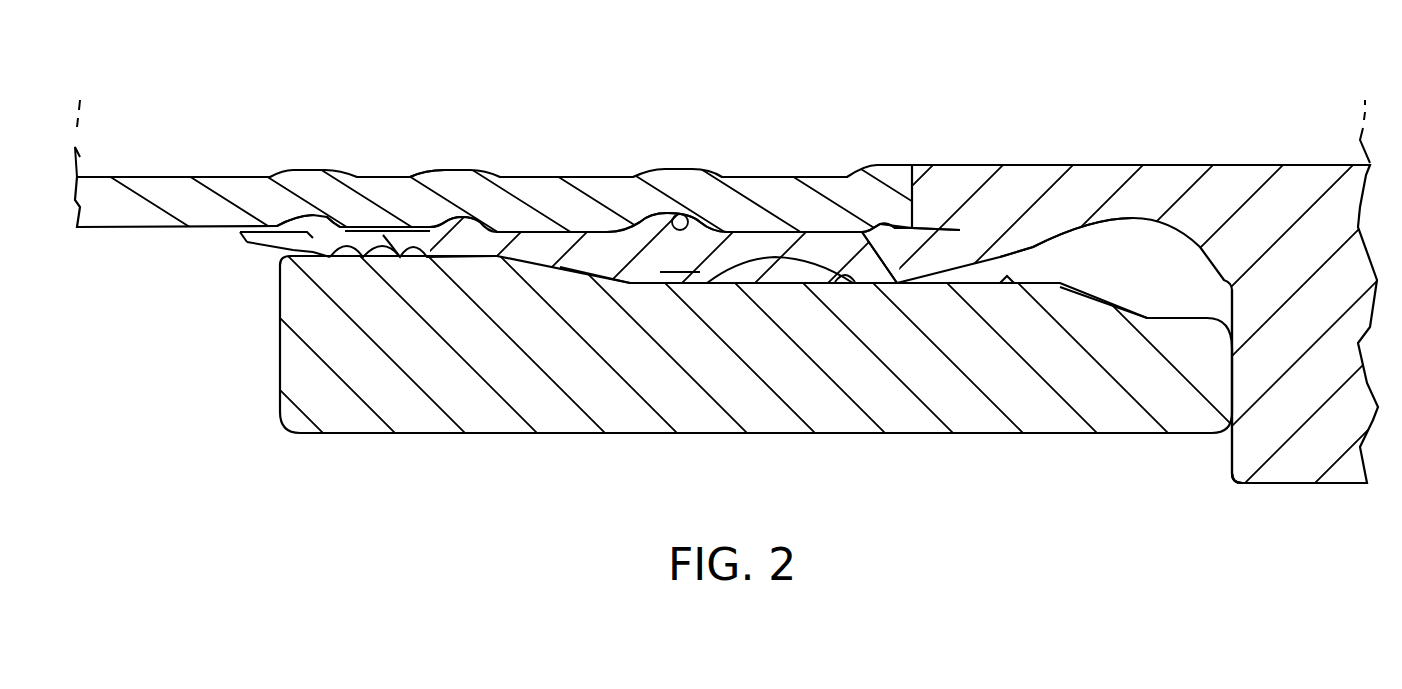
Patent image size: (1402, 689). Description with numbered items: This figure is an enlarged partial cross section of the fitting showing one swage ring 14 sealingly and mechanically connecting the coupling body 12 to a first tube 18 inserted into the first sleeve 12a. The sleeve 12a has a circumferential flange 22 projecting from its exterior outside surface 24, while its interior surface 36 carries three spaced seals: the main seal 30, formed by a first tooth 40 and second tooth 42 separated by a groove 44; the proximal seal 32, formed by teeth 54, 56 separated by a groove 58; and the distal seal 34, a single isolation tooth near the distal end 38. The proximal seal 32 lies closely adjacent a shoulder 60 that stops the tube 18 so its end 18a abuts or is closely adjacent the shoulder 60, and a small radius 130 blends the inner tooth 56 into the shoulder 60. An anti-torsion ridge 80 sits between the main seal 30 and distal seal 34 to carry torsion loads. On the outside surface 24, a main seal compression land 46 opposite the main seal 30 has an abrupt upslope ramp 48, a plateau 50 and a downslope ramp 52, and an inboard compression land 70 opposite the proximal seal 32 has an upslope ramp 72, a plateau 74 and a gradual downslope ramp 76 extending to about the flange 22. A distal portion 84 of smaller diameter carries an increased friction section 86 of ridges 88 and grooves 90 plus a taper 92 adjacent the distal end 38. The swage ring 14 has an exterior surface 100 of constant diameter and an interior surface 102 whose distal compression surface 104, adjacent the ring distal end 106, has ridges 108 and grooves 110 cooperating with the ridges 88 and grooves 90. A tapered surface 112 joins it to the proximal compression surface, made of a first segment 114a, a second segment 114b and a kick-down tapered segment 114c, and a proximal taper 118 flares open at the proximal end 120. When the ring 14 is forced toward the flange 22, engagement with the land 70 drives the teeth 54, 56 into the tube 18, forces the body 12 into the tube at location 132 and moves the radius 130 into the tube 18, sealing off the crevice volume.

The coupling body 12 is at (1290, 494).
The first sleeve 12a is at (1007, 290).
The swage ring 14 is at (367, 433).
The tube 18 is at (136, 240).
The tube end 18a is at (913, 198).
The circumferential flange 22 is at (1250, 440).
The exterior outside surface 24 is at (528, 256).
The main seal 30 is at (688, 175).
The proximal seal 32 is at (890, 210).
The distal seal 34 is at (313, 205).
The interior surface 36 is at (765, 230).
The distal end 38 is at (240, 237).
The first tooth 40 is at (653, 213).
The second tooth 42 is at (695, 217).
The groove 44 is at (677, 200).
The main seal compression land 46 is at (680, 270).
The upslope ramp 48 is at (590, 267).
The plateau 50 is at (653, 283).
The downslope ramp 52 is at (777, 287).
The tooth 54 is at (890, 227).
The inner tooth 56 is at (895, 227).
The groove 58 is at (903, 222).
The shoulder 60 is at (905, 195).
The inboard compression land 70 is at (957, 260).
The upslope ramp 72 is at (830, 267).
The plateau 74 is at (887, 237).
The downslope ramp 76 is at (1028, 248).
The anti-torsion ridge 80 is at (488, 203).
The distal portion 84 is at (431, 232).
The increased friction section 86 is at (362, 215).
The friction ridges 88 is at (358, 255).
The grooves 90 is at (392, 256).
The taper 92 is at (257, 247).
The exterior surface 100 is at (593, 437).
The interior surface 102 is at (799, 266).
The distal compression surface 104 is at (464, 252).
The swage ring distal end 106 is at (280, 353).
The ridges 108 is at (388, 252).
The grooves 110 is at (370, 255).
The tapered surface 112 is at (555, 277).
The first segment 114a is at (617, 270).
The second segment 114b is at (1020, 285).
The kick-down tapered segment 114c is at (837, 277).
The proximal taper 118 is at (1100, 295).
The proximal end 120 is at (1233, 378).
The radius 130 is at (943, 232).
The location 132 is at (865, 227).